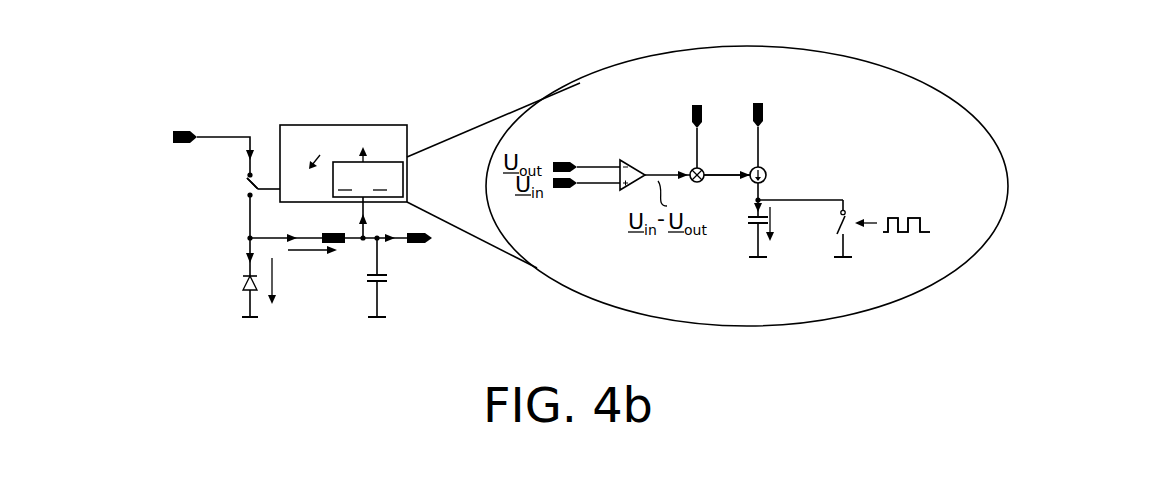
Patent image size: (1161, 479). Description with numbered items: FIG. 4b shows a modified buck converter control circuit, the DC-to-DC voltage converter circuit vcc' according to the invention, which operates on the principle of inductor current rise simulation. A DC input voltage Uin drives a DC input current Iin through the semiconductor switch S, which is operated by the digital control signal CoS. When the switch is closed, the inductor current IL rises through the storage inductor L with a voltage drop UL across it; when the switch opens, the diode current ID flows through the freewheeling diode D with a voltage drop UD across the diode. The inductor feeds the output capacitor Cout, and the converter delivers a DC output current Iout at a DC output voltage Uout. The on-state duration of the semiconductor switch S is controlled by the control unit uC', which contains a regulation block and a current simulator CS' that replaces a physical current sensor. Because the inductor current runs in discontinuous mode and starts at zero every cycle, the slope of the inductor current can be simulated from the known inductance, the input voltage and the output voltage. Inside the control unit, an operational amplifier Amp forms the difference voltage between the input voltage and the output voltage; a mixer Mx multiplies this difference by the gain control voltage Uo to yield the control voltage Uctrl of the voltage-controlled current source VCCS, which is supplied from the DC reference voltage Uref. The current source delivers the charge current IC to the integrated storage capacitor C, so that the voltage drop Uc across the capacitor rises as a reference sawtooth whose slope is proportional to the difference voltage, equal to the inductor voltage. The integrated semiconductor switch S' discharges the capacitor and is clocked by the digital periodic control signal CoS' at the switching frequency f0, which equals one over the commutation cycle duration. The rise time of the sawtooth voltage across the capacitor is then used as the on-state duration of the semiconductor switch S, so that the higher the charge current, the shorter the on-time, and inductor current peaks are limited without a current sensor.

The DC input voltage Uin is at (159, 139).
The DC input current Iin is at (232, 171).
The digital control signal of semiconductor switch S CoS is at (266, 140).
The semiconductor switch S is at (255, 189).
The DC-to-DC voltage converter circuit vcc' is at (196, 256).
The diode current ID is at (232, 258).
The freewheeling diode D is at (241, 282).
The voltage drop across freewheeling diode D UD is at (294, 293).
The inductor current IL is at (294, 225).
The storage inductor L is at (333, 223).
The voltage drop across storage inductor L UL is at (316, 278).
The DC output current Iout is at (405, 271).
The DC output voltage Uout is at (454, 265).
The output capacitor Cout is at (397, 277).
The control unit uC' is at (343, 126).
The current simulator CS' is at (391, 172).
The operational amplifier Amp is at (623, 163).
The mixer Mx is at (684, 159).
The gain control voltage Uo is at (706, 100).
The control voltage of voltage-controlled current source VCCS Uctrl is at (717, 172).
The DC reference voltage Uref is at (759, 98).
The voltage-controlled current source VCCS is at (791, 175).
The charge current of storage capacitor C IC is at (736, 206).
The integrated storage capacitor of control unit μC' C is at (749, 233).
The voltage drop across storage capacitor C Uc is at (827, 233).
The semiconductor switch of control circuit μC' S' is at (813, 222).
The digital periodic control signal of semiconductor switch S' CoS' is at (895, 209).
The switching frequency f0 is at (932, 258).